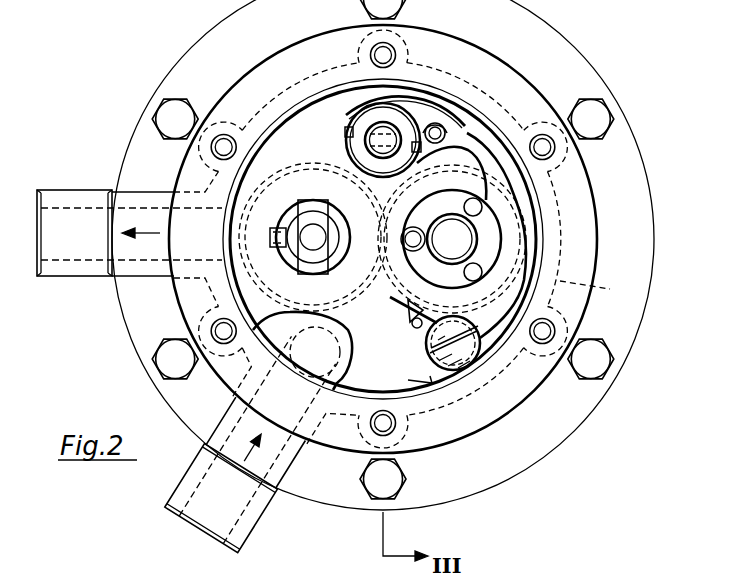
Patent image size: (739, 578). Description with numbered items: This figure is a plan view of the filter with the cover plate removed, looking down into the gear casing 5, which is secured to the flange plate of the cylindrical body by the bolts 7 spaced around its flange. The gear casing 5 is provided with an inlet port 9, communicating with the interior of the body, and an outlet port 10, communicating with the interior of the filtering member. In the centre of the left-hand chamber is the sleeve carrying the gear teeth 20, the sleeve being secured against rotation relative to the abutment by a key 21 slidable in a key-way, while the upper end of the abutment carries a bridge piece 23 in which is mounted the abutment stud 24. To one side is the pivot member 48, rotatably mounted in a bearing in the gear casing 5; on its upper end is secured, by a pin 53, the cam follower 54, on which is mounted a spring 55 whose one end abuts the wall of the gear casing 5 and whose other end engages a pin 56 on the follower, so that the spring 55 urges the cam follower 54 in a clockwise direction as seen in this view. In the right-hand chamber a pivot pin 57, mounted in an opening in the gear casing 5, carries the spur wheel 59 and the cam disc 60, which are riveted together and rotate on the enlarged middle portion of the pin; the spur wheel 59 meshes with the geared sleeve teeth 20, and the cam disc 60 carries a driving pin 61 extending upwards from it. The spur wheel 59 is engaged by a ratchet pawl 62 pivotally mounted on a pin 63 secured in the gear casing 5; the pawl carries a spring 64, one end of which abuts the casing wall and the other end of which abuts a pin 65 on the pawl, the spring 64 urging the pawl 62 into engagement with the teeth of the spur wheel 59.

The gear casing 5 is at (383, 255).
The bolts 7 is at (170, 111).
The inlet port 9 is at (228, 500).
The outlet port 10 is at (73, 249).
The gear teeth 20 is at (316, 167).
The key 21 is at (272, 238).
The bridge piece 23 is at (310, 212).
The abutment stud 24 is at (316, 246).
The pivot member 48 is at (360, 150).
The pin 53 is at (347, 128).
The cam follower 54 is at (467, 133).
The spring 55 is at (420, 100).
The pin 56 is at (437, 122).
The pivot pin 57 is at (452, 239).
The spur wheel 59 is at (523, 248).
The cam disc 60 is at (487, 232).
The driving pin 61 is at (401, 236).
The ratchet pawl 62 is at (419, 312).
The pin 63 is at (478, 352).
The spring 64 is at (410, 382).
The pin 65 is at (427, 347).